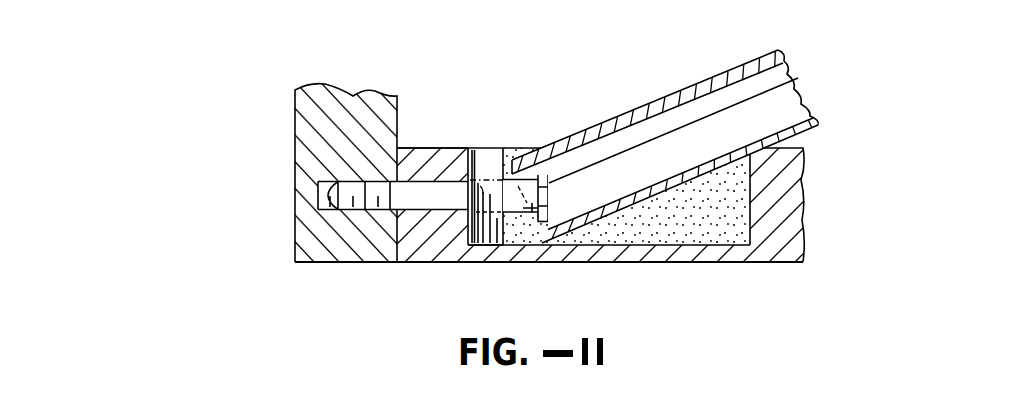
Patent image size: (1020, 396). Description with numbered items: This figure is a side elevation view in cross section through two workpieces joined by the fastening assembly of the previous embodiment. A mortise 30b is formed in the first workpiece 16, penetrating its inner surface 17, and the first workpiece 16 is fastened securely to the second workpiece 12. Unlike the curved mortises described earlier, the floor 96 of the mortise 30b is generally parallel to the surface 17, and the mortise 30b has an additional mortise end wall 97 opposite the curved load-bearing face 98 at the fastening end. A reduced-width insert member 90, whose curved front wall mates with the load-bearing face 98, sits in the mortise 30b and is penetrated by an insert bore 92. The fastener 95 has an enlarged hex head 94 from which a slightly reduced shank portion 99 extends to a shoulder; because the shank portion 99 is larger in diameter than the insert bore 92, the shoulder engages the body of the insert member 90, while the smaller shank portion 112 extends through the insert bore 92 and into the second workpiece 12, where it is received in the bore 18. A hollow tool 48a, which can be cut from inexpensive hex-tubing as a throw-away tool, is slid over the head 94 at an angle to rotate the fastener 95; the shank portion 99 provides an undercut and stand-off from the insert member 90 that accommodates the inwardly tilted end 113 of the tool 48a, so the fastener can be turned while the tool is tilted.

The second workpiece 12 is at (296, 128).
The first workpiece 16 is at (781, 246).
The surface 17 is at (448, 147).
The bore 18 is at (397, 219).
The mortise 30b is at (735, 212).
The tool 48a is at (675, 92).
The insert member 90 is at (480, 142).
The insert bore 92 is at (465, 197).
The head 94 is at (558, 195).
The fastener 95 is at (414, 188).
The floor 96 is at (676, 243).
The mortise end wall 97 is at (746, 174).
The curved load-bearing face 98 is at (468, 167).
The shank portion 99 is at (506, 247).
The shank portion 112 is at (408, 250).
The end 113 is at (513, 158).